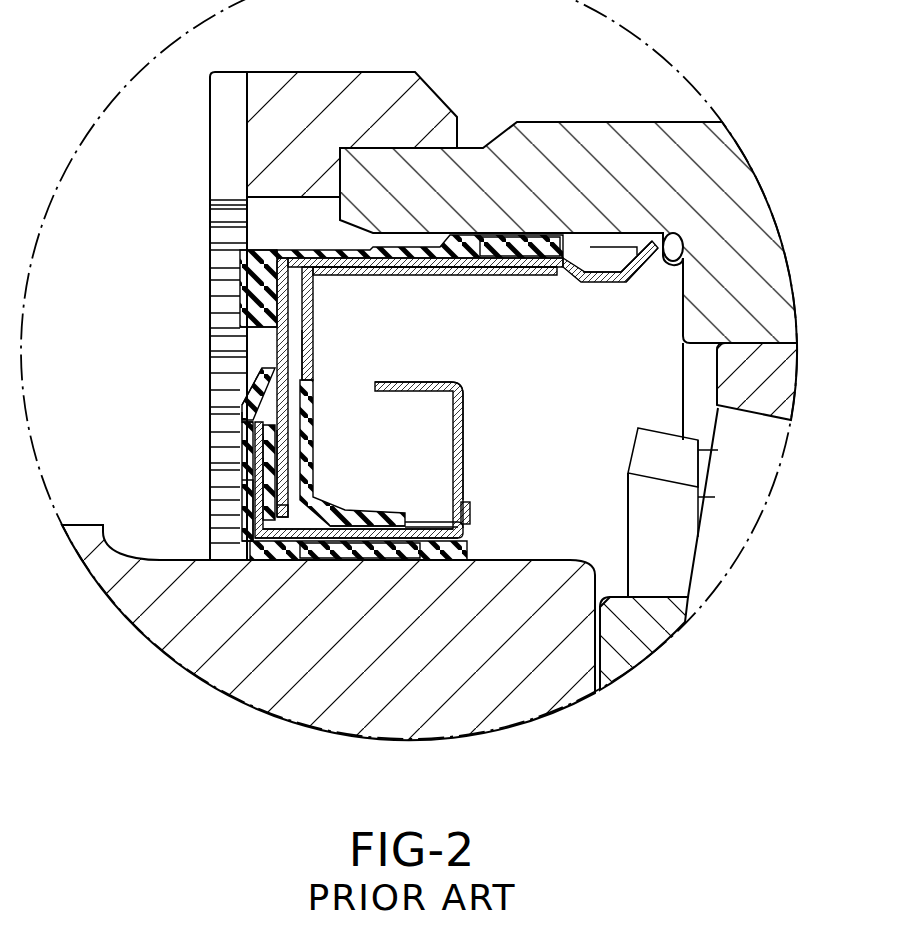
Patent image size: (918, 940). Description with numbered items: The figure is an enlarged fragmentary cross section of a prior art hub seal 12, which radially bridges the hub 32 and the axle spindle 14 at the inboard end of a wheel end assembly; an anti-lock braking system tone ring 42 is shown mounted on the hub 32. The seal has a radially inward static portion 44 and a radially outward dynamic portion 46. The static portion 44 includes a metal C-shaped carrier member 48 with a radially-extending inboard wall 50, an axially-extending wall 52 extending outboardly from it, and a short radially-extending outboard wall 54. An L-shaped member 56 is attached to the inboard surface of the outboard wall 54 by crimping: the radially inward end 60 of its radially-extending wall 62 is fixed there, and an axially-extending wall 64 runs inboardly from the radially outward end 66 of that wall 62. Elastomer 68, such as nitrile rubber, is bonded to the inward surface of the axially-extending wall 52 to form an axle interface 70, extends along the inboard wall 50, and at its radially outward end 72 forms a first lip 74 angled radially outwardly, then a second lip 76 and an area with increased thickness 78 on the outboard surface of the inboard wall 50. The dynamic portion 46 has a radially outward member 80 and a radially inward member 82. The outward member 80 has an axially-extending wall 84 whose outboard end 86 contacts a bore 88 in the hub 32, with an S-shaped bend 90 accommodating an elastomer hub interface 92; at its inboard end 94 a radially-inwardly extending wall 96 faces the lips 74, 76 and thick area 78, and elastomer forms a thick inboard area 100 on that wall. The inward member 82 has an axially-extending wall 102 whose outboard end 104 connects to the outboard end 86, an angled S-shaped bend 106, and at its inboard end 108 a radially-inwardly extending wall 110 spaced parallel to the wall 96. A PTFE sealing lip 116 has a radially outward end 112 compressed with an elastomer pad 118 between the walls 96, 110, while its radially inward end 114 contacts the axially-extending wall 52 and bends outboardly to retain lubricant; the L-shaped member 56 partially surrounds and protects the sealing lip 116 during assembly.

The hub seal 12 is at (454, 409).
The axle spindle 14 is at (133, 552).
The hub 32 is at (593, 122).
The anti-lock braking system tone ring 42 is at (212, 240).
The static portion 44 is at (240, 482).
The dynamic portion 46 is at (240, 289).
The C-shaped carrier member 48 is at (427, 535).
The radially-extending inboard wall 50 is at (262, 497).
The axially-extending wall 52 is at (340, 537).
The radially-extending outboard wall 54 is at (470, 511).
The L-shaped member 56 is at (460, 428).
The radially inward end 60 is at (468, 535).
The radially-extending wall 62 is at (460, 452).
The axially-extending wall 64 is at (407, 384).
The radially outward end 66 is at (462, 388).
The elastomer 68 is at (362, 542).
The axle interface 70 is at (282, 517).
The radially outward end 72 is at (245, 428).
The first lip 74 is at (265, 392).
The second lip 76 is at (262, 418).
The area with increased thickness 78 is at (268, 484).
The radially outward member 80 is at (593, 245).
The radially inward member 82 is at (432, 262).
The axially-extending wall 84 is at (473, 267).
The outboard end 86 is at (627, 233).
The bore 88 is at (700, 258).
The S-shaped bend 90 is at (570, 258).
The hub interface 92 is at (482, 247).
The inboard end 94 is at (282, 258).
The radially-inwardly extending wall 96 is at (278, 362).
The thick inboard area 100 is at (260, 285).
The axially-extending wall 102 is at (400, 275).
The outboard end 104 is at (637, 247).
The angled S-shaped bend 106 is at (585, 262).
The inboard end 108 is at (312, 276).
The radially-inwardly extending wall 110 is at (307, 446).
The radially outward end 112 is at (302, 283).
The radially inward end 114 is at (390, 520).
The sealing lip 116 is at (300, 400).
The elastomer pad 118 is at (290, 325).